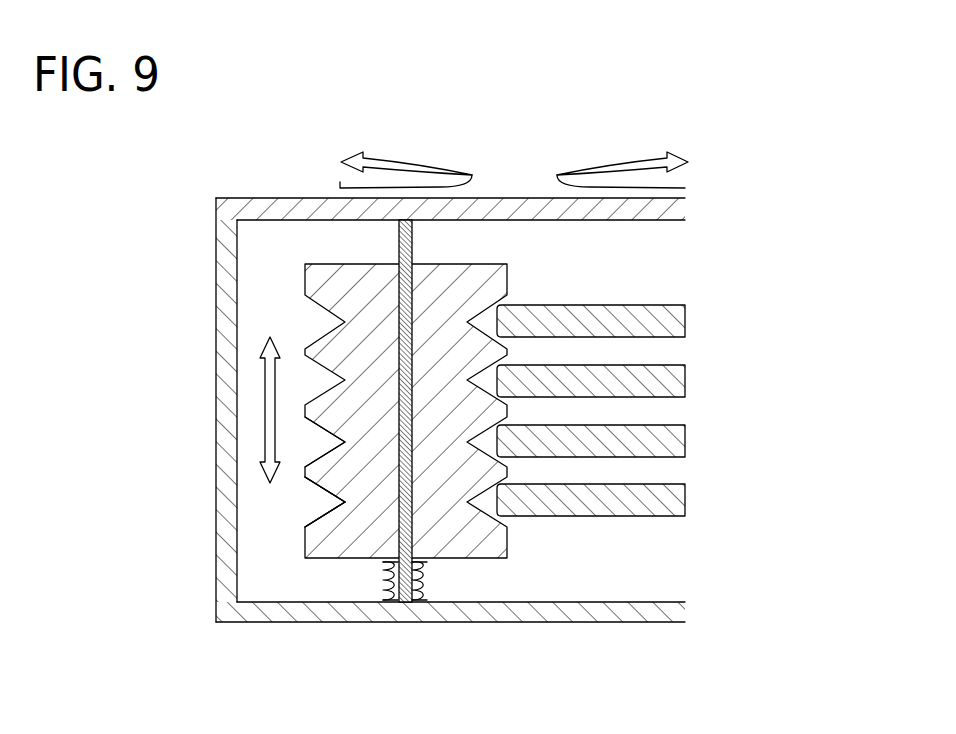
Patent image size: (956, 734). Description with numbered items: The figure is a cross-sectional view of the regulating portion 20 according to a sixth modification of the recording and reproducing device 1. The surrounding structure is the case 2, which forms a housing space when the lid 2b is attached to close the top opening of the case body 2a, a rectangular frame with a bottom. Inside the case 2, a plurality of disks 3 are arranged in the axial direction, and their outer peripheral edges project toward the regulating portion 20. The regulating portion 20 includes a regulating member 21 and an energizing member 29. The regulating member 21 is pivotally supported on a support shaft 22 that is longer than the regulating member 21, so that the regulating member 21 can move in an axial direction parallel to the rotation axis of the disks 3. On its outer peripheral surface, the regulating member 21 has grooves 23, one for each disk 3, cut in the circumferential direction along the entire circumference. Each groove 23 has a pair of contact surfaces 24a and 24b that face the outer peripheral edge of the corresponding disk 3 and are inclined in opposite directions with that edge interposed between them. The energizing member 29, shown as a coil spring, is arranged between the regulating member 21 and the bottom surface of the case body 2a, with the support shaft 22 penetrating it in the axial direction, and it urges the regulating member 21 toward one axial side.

The recording and reproducing device 1 is at (105, 177).
The case 2 is at (206, 432).
The case body 2a is at (547, 622).
The lid 2b is at (518, 198).
The disks 3 is at (589, 527).
The regulating portion 20 is at (456, 570).
The regulating member 21 is at (330, 488).
The support shaft 22 is at (404, 601).
The grooves 23 is at (301, 499).
The contact surface 24a is at (318, 518).
The contact surface 24b is at (330, 490).
The energizing member 29 is at (383, 580).